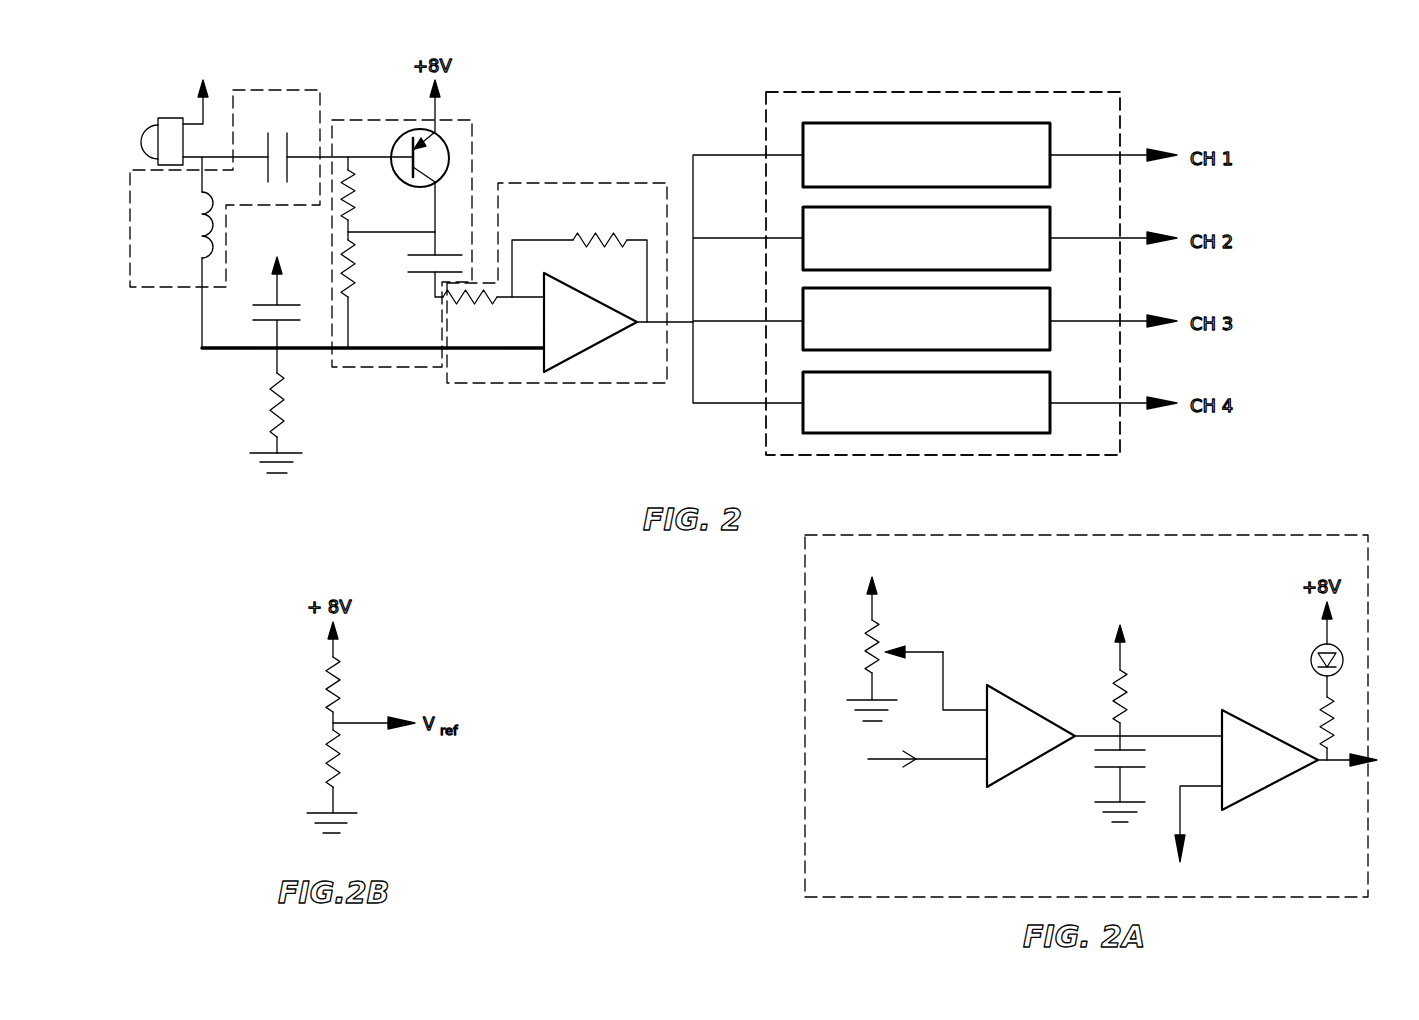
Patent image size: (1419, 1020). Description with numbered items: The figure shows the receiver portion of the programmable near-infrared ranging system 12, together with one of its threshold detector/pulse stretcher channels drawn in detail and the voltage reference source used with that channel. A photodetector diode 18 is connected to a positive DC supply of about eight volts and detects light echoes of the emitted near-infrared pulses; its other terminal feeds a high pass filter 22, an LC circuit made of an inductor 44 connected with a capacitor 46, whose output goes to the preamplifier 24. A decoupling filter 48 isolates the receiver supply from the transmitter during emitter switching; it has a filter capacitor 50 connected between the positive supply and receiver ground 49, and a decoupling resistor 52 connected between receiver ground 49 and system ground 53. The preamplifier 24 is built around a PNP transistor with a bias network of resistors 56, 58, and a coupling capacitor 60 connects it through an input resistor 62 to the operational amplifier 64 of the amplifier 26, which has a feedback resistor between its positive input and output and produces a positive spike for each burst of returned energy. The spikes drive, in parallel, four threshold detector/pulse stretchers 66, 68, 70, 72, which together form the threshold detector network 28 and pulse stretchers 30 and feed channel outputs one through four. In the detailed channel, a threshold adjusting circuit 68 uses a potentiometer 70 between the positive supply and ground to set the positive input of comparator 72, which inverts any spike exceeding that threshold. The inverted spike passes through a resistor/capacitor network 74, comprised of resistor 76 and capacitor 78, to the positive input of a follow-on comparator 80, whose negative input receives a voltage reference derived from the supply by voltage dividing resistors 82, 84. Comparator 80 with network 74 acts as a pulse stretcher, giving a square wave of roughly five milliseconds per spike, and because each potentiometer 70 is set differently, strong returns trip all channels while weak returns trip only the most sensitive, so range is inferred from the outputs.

In FIG. 2, the programmable near-infrared ranging system 12 is at (608, 134).
In FIG. 2, the photodetector diode 18 is at (147, 132).
In FIG. 2, the high pass filter 22 is at (258, 90).
In FIG. 2, the preamplifier 24 is at (410, 368).
In FIG. 2, the amplifier 26 is at (565, 384).
In FIG. 2, the threshold detector network 28 is at (862, 91).
In FIG. 2, the pulse stretchers 30 is at (963, 91).
In FIG. 2, the inductor 44 is at (208, 218).
In FIG. 2, the capacitor 46 is at (290, 160).
In FIG. 2, the decoupling filter 48 is at (238, 358).
In FIG. 2, the receiver ground 49 is at (300, 351).
In FIG. 2, the filter capacitor 50 is at (257, 311).
In FIG. 2, the decoupling resistor 52 is at (273, 403).
In FIG. 2, the system ground 53 is at (252, 472).
In FIG. 2, the resistor 56 is at (355, 200).
In FIG. 2, the resistor 58 is at (355, 268).
In FIG. 2, the coupling capacitor 60 is at (418, 275).
In FIG. 2, the input resistor 62 is at (460, 303).
In FIG. 2, the operational amplifier 64 is at (594, 336).
In FIG. 2, the threshold detector/pulse stretcher 66 is at (582, 250).
In FIG. 2A, the threshold detector/pulse stretcher 66 is at (1373, 595).
In FIG. 2, the threshold detector/pulse stretcher 68 is at (1052, 223).
In FIG. 2A, the threshold detector/pulse stretcher 68 is at (852, 646).
In FIG. 2, the threshold detector/pulse stretcher 70 is at (1052, 304).
In FIG. 2A, the threshold detector/pulse stretcher 70 is at (877, 630).
In FIG. 2, the threshold detector/pulse stretcher 72 is at (1052, 388).
In FIG. 2A, the threshold detector/pulse stretcher 72 is at (1018, 700).
In FIG. 2A, the resistor/capacitor network 74 is at (1148, 687).
In FIG. 2A, the resistor 76 is at (1130, 708).
In FIG. 2A, the capacitor 78 is at (1138, 758).
In FIG. 2A, the comparator 80 is at (1257, 723).
In FIG. 2B, the voltage dividing resistor 82 is at (330, 693).
In FIG. 2B, the voltage dividing resistor 84 is at (330, 781).